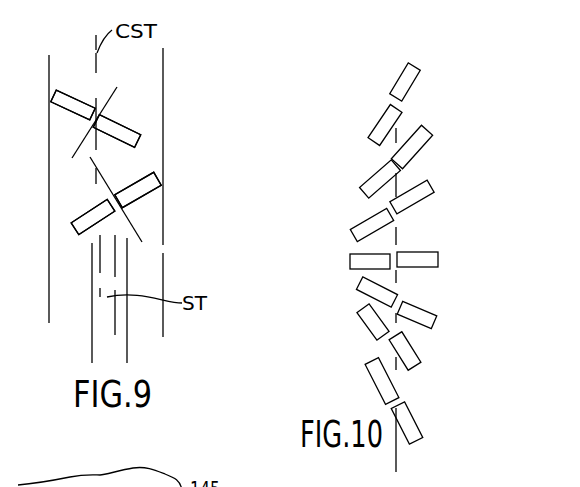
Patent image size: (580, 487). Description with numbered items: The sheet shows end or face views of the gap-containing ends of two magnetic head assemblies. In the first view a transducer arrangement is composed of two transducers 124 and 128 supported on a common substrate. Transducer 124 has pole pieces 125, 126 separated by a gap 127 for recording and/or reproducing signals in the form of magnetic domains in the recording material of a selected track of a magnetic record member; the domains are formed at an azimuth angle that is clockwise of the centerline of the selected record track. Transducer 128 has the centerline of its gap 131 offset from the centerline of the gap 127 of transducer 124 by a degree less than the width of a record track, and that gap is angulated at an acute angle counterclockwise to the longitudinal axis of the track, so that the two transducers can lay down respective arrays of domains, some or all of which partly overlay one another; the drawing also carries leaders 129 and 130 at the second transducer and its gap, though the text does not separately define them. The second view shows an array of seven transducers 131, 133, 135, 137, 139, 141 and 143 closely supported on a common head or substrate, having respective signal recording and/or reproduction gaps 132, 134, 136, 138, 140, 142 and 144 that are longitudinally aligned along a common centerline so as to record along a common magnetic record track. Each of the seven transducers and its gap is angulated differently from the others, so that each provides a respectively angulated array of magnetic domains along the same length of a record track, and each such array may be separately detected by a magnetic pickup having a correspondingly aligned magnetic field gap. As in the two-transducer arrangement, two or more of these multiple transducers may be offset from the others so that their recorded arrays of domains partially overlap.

In FIG. 9, the transducer 124 is at (70, 112).
In FIG. 9, the pole piece 125 is at (54, 92).
In FIG. 9, the pole piece 126 is at (133, 130).
In FIG. 9, the gap 127 is at (100, 112).
In FIG. 9, the transducer 128 is at (153, 175).
In FIG. 9, the track segment end 129 is at (158, 192).
In FIG. 9, the fourth track segment 130 is at (73, 234).
In FIG. 9, the gap 131 is at (113, 197).
In FIG. 10, the gap 131 is at (420, 72).
In FIG. 10, the gap 132 is at (388, 102).
In FIG. 10, the transducer 133 is at (428, 128).
In FIG. 10, the gap 134 is at (403, 168).
In FIG. 10, the transducer 135 is at (435, 189).
In FIG. 10, the gap 136 is at (398, 215).
In FIG. 10, the transducer 137 is at (438, 253).
In FIG. 10, the gap 138 is at (397, 268).
In FIG. 10, the transducer 139 is at (438, 322).
In FIG. 10, the gap 140 is at (408, 297).
In FIG. 10, the transducer 141 is at (423, 361).
In FIG. 10, the gap 142 is at (382, 335).
In FIG. 10, the transducer 143 is at (422, 428).
In FIG. 10, the gap 144 is at (402, 397).